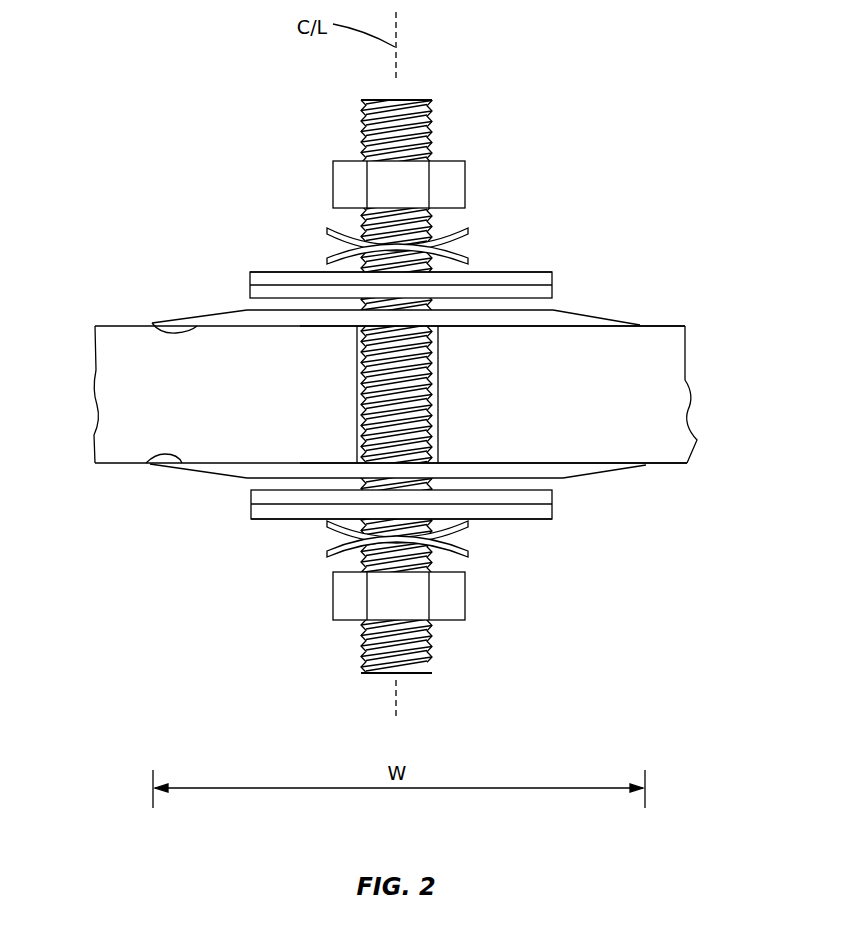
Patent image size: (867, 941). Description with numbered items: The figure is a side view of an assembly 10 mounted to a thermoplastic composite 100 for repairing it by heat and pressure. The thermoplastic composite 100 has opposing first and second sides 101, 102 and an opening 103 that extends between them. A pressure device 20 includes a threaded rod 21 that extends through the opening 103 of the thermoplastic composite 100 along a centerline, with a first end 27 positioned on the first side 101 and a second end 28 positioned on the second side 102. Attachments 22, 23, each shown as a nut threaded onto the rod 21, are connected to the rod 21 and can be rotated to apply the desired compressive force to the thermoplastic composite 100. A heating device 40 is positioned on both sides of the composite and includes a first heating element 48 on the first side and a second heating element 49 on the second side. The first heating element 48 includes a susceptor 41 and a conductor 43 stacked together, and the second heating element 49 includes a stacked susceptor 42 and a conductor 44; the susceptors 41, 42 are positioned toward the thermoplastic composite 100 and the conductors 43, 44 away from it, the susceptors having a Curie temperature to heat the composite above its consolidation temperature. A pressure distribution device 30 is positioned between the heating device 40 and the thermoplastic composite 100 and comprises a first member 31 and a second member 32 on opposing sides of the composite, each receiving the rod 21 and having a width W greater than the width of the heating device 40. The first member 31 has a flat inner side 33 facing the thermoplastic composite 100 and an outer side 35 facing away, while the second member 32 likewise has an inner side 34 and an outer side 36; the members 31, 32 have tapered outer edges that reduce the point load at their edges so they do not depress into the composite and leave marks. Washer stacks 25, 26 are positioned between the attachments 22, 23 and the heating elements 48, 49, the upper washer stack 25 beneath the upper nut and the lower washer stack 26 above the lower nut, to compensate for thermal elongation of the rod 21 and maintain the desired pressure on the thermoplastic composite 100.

The assembly 10 is at (546, 84).
The pressure device 20 is at (310, 178).
The rod 21 is at (358, 220).
The attachment 22 is at (445, 182).
The attachment 23 is at (450, 595).
The washer stack 25 is at (340, 238).
The lower spring washer 26 is at (328, 557).
The first end 27 is at (412, 100).
The second end 28 is at (412, 677).
The pressure distribution device 30 is at (389, 378).
The first member 31 is at (618, 318).
The second member 32 is at (645, 467).
The inner side 33 is at (160, 327).
The inner side 34 is at (152, 463).
The outer side 35 is at (389, 294).
The outer side 36 is at (385, 492).
The heating device 40 is at (405, 370).
The susceptor 41 is at (248, 292).
The susceptor 42 is at (552, 498).
The conductor 43 is at (515, 270).
The conductor 44 is at (538, 520).
The first heating element 48 is at (506, 258).
The second heating element 49 is at (524, 540).
The thermoplastic composite 100 is at (430, 390).
The first side 101 is at (667, 325).
The second side 102 is at (670, 467).
The opening 103 is at (438, 387).